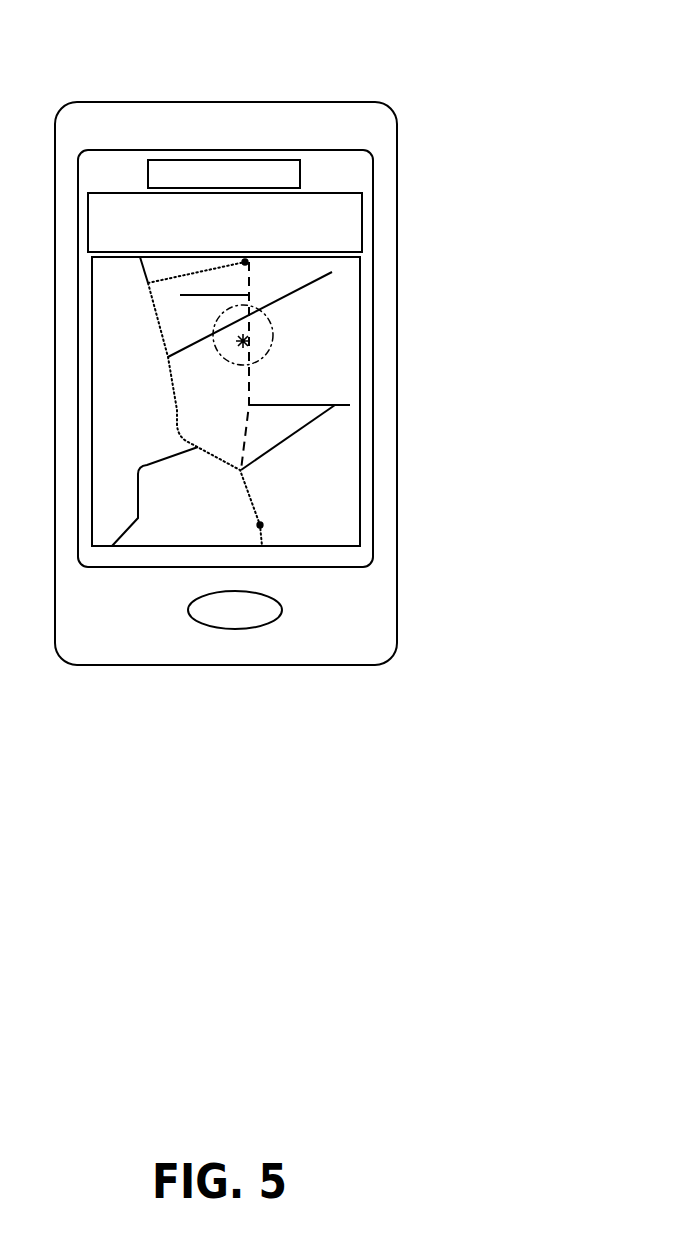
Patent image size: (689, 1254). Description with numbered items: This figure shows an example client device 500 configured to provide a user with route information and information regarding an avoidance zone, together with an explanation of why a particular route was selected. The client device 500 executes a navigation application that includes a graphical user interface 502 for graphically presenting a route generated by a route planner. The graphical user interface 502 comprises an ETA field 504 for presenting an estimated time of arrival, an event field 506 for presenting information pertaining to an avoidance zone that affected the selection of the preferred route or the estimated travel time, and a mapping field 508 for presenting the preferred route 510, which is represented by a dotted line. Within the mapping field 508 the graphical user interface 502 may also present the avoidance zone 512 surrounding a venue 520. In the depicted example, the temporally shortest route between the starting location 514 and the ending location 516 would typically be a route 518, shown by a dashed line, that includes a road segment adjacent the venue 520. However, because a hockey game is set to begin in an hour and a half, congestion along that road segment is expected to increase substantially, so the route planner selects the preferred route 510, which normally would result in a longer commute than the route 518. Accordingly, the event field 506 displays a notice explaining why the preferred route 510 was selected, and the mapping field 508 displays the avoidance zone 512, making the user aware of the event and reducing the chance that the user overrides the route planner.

The client device 500 is at (291, 101).
The graphical user interface 502 is at (373, 189).
The ETA field 504 is at (300, 175).
The event field 506 is at (362, 222).
The mapping field 508 is at (360, 300).
The preferred route 510 is at (176, 393).
The avoidance zone 512 is at (277, 328).
The starting location 514 is at (262, 522).
The ending location 516 is at (247, 264).
The route 518 is at (253, 384).
The venue 520 is at (239, 346).